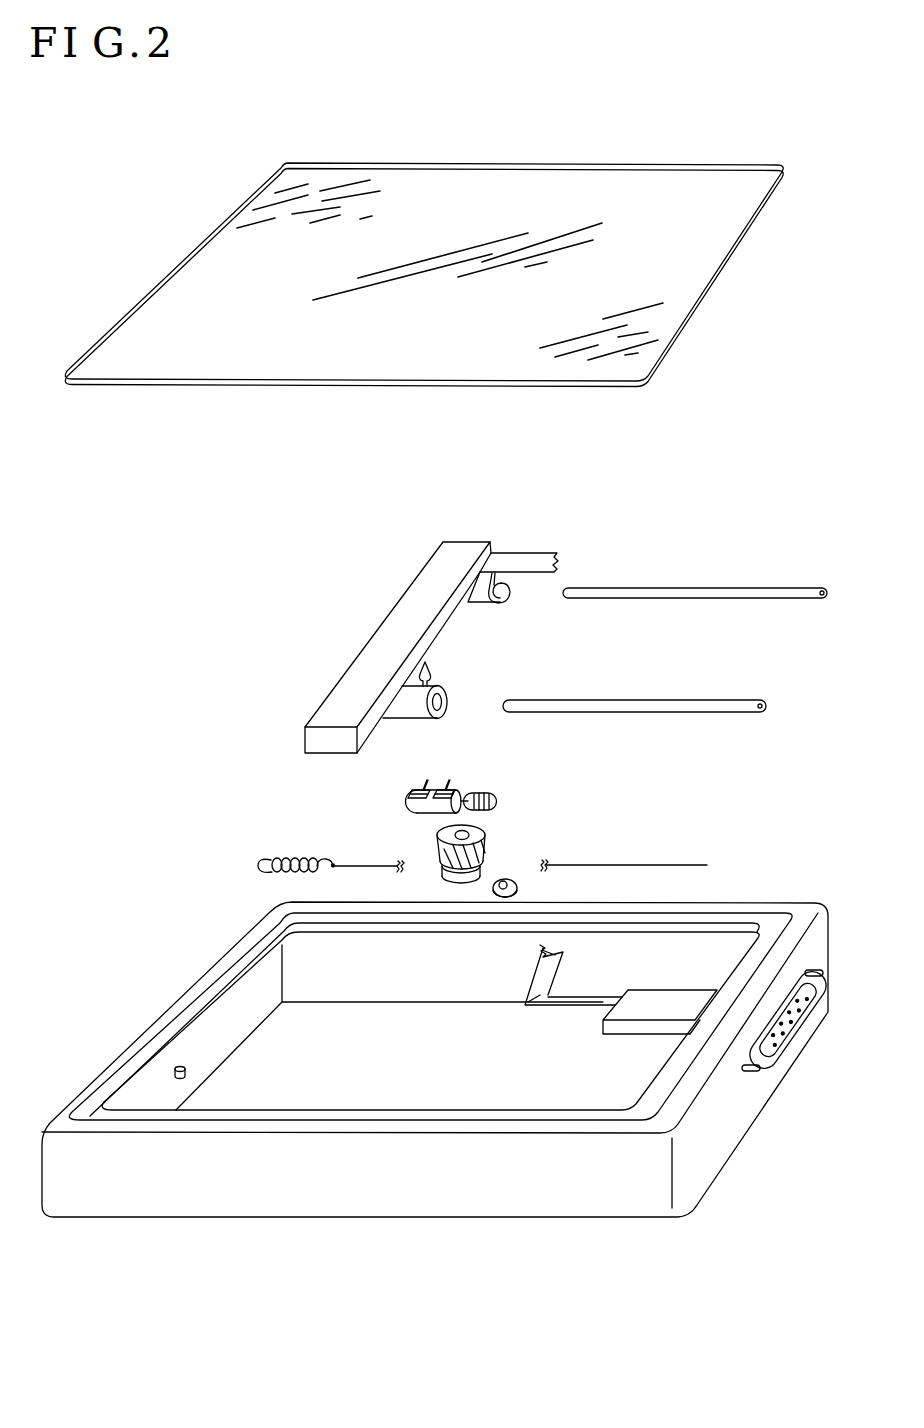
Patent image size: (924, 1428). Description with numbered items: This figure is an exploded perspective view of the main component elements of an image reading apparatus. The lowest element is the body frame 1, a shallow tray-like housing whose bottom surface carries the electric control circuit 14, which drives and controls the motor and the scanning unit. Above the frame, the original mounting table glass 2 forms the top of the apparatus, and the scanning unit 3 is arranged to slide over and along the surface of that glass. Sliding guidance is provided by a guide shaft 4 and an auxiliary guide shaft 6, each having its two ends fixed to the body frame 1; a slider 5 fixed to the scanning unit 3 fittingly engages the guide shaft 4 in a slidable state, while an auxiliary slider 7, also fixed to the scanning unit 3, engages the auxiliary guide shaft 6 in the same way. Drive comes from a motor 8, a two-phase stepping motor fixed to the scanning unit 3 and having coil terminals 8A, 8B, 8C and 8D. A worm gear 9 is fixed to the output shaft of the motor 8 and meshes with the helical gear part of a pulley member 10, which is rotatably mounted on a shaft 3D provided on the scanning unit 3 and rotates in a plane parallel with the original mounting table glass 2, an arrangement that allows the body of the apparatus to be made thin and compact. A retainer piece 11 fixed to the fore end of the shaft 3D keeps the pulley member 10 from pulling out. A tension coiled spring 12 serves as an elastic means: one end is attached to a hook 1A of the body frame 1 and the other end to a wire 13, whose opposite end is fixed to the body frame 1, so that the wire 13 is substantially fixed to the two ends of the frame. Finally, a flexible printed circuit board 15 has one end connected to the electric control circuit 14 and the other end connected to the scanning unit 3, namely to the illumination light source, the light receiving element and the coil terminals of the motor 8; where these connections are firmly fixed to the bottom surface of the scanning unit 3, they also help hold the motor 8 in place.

The body frame 1 is at (318, 1187).
The hook 1A is at (179, 1067).
The original mounting table glass 2 is at (500, 185).
The scanning unit 3 is at (447, 552).
The shaft 3D is at (429, 667).
The guide shaft 4 is at (733, 708).
The slider 5 is at (446, 691).
The auxiliary guide shaft 6 is at (750, 597).
The auxiliary slider 7 is at (509, 598).
The motor 8 is at (402, 810).
The coil terminal 8A is at (427, 779).
The coil terminal 8B is at (413, 788).
The coil terminal 8C is at (449, 780).
The coil terminal 8D is at (456, 790).
The worm gear 9 is at (493, 802).
The pulley member 10 is at (486, 841).
The retainer piece 11 is at (514, 885).
The tension coiled spring 12 is at (265, 860).
The wire 13 is at (683, 863).
The electric control circuit 14 is at (692, 1003).
The flexible printed circuit board 15 is at (537, 546).